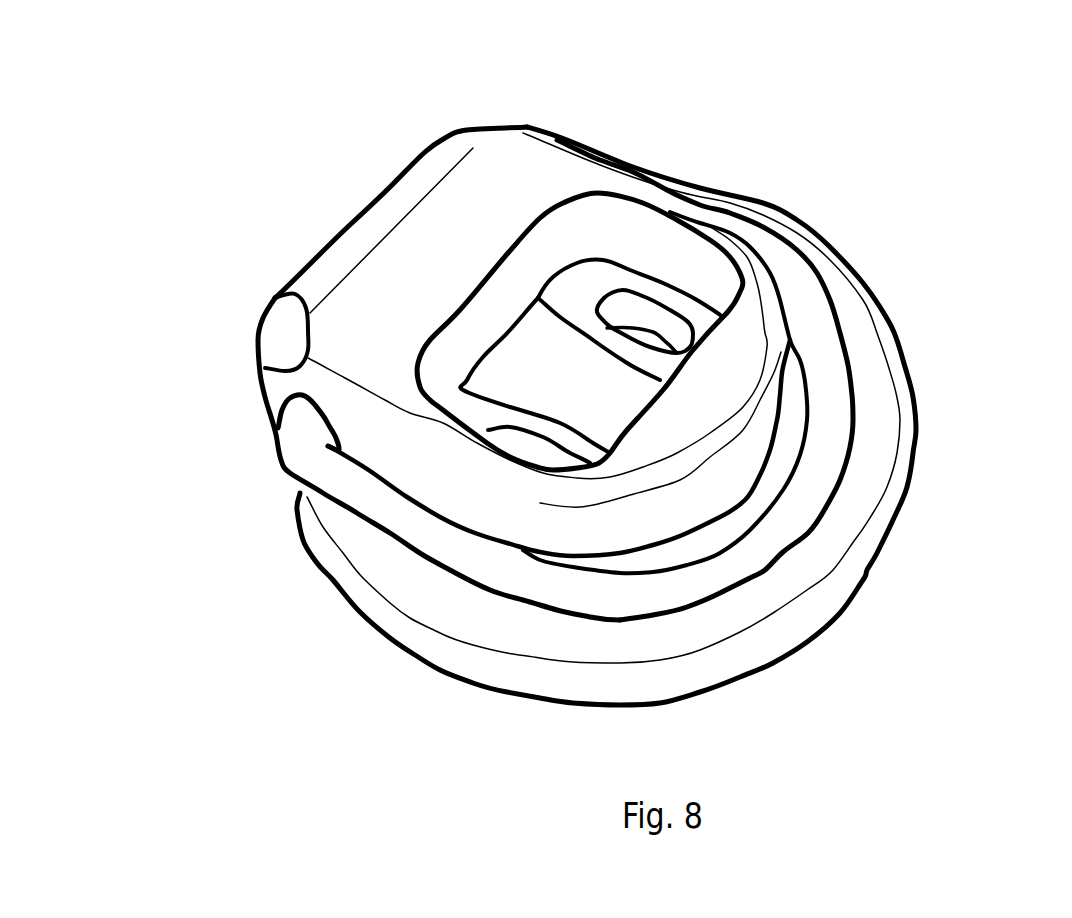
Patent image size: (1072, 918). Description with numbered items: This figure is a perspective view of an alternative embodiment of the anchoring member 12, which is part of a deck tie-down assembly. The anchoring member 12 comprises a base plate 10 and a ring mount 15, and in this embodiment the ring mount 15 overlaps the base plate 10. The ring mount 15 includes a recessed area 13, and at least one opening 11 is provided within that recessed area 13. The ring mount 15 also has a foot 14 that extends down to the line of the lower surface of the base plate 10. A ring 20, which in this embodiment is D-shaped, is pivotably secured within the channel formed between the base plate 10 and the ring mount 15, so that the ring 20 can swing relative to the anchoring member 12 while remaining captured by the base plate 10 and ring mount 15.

The base plate 10 is at (438, 605).
The opening 11 is at (643, 338).
The anchoring member 12 is at (240, 153).
The recessed area 13 is at (677, 263).
The foot 14 is at (267, 412).
The ring mount 15 is at (473, 197).
The ring 20 is at (813, 323).